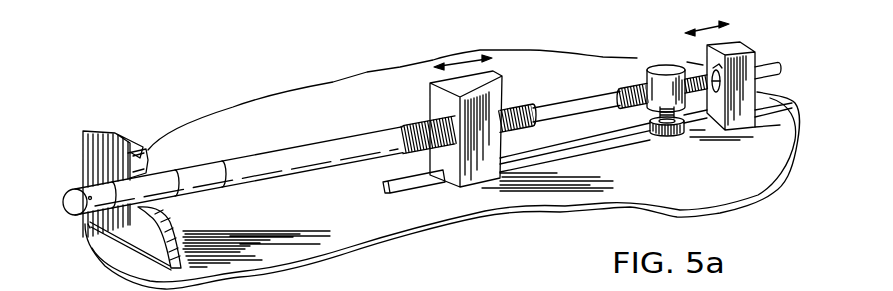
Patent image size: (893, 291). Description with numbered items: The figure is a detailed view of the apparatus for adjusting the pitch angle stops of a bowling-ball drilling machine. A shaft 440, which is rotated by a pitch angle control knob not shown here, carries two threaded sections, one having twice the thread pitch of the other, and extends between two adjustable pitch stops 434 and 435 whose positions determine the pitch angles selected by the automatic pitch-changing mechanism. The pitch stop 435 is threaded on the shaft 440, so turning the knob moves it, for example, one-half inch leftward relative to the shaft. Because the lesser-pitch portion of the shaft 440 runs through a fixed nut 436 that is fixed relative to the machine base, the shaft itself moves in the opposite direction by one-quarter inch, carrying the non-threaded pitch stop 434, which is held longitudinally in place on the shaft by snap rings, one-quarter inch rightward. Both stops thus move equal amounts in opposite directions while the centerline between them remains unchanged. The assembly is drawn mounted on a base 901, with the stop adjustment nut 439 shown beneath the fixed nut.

The base plate 901 is at (322, 217).
The shaft 440 is at (258, 158).
The pitch stop 435 is at (456, 185).
The fixed nut 436 is at (657, 66).
The knurled nut 439 is at (652, 136).
The pitch stop 434 is at (710, 52).